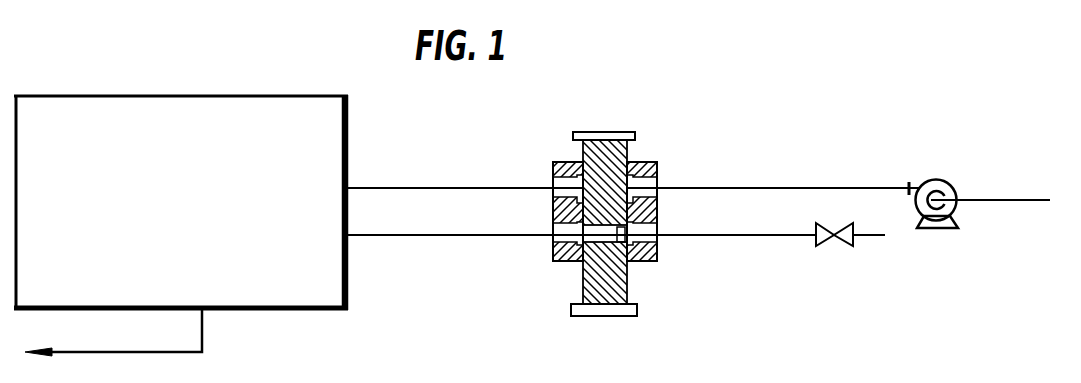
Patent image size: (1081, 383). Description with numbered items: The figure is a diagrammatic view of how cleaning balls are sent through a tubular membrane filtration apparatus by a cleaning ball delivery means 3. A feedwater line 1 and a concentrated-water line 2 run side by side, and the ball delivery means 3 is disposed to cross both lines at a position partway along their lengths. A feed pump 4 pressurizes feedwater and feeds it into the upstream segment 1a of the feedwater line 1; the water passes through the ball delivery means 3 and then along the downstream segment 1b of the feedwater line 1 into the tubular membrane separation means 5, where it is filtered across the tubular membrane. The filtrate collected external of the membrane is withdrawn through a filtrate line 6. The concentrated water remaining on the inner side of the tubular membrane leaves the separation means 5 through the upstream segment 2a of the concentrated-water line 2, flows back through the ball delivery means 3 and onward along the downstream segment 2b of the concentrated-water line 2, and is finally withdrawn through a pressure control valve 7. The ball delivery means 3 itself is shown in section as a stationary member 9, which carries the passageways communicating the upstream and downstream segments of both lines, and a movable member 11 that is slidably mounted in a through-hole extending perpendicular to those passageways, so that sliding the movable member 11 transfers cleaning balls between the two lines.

The feedwater line 1 is at (841, 184).
The upstream segment of the feedwater line 1a is at (714, 186).
The downstream segment of the feedwater line 1b is at (413, 186).
The concentrated-water line 2 is at (777, 238).
The upstream segment of the concentrated-water line 2a is at (419, 220).
The downstream segment of the concentrated-water line 2b is at (718, 237).
The cleaning ball delivery means 3 is at (612, 207).
The feed pump 4 is at (960, 189).
The tubular membrane separation means 5 is at (331, 103).
The filtrate line 6 is at (138, 353).
The pressure control valve 7 is at (841, 247).
The stationary member 9 is at (652, 168).
The movable member 11 is at (593, 275).